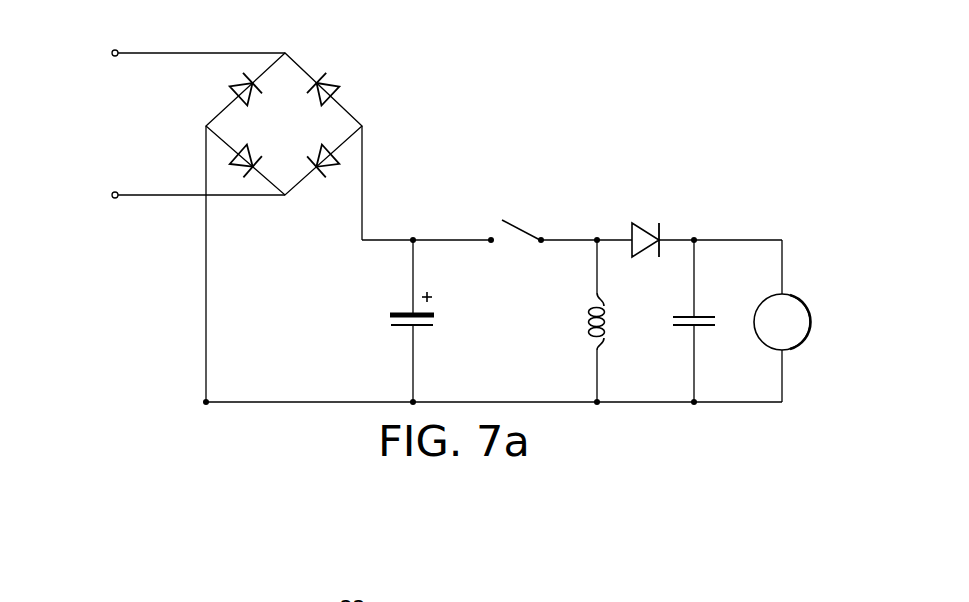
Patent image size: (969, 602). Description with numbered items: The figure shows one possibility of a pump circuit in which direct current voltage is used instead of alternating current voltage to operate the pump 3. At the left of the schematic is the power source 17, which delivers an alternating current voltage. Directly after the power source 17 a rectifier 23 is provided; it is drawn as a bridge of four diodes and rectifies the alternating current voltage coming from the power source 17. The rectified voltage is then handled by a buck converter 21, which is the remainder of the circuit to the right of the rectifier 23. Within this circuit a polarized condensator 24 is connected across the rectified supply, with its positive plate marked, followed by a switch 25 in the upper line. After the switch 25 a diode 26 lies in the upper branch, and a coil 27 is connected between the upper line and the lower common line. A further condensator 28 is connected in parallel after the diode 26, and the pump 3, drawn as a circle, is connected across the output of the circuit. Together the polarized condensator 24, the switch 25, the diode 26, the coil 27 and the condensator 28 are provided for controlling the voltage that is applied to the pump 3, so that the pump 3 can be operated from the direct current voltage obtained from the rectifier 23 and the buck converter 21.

The pump 3 is at (811, 320).
The power source 17 is at (110, 52).
The buck converter 21 is at (682, 95).
The rectifier 23 is at (303, 67).
The polarized condensator 24 is at (387, 318).
The switch 25 is at (514, 225).
The diode 26 is at (648, 227).
The coil 27 is at (588, 320).
The condensator 28 is at (709, 317).